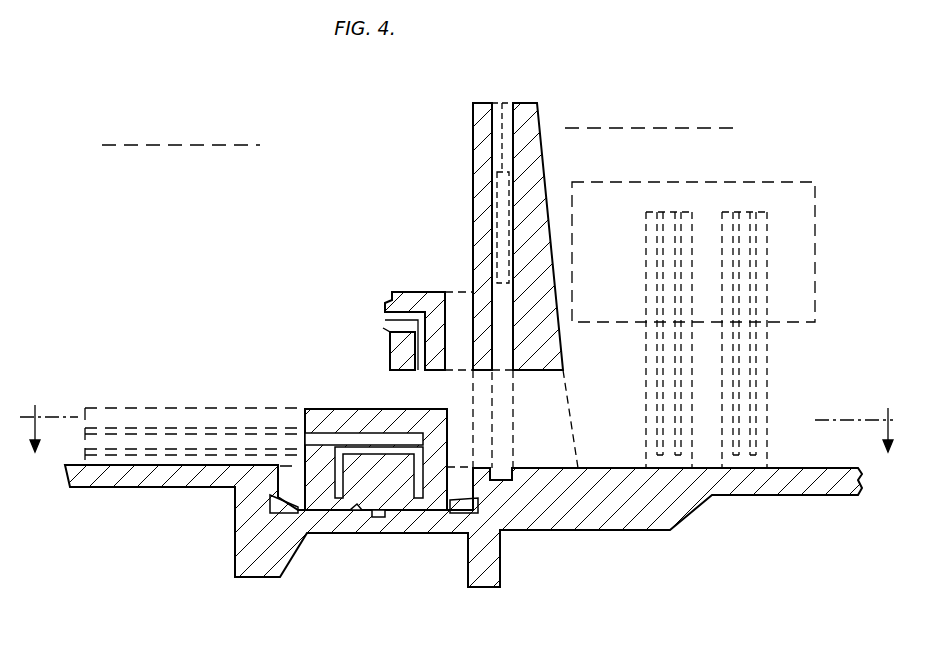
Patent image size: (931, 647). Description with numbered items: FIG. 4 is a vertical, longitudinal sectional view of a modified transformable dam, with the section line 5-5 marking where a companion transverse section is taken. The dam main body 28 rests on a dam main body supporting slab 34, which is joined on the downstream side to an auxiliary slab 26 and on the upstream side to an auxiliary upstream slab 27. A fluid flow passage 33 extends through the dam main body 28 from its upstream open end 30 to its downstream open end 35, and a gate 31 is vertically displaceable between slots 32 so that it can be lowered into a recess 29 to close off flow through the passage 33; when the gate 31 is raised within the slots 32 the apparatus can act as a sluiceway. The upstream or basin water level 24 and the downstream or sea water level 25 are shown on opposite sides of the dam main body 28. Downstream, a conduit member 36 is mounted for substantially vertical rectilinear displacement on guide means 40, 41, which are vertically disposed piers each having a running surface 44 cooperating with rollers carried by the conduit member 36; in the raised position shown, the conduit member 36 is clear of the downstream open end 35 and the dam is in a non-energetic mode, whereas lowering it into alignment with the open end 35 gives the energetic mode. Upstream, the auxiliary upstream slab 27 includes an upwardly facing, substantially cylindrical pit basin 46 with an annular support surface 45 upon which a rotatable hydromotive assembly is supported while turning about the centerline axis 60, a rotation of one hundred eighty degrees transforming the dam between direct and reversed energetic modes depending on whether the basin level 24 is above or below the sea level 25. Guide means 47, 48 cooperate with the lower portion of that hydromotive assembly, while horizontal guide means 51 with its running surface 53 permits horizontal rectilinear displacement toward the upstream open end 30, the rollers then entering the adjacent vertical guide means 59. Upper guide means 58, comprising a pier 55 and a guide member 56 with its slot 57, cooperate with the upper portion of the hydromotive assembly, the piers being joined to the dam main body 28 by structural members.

The section line 5- 5 is at (457, 440).
The upstream water level 24 is at (166, 142).
The downstream water level 25 is at (686, 120).
The auxiliary slab 26 is at (753, 492).
The auxiliary upstream slab 27 is at (158, 484).
The dam main body 28 is at (523, 301).
The recess 29 is at (500, 475).
The upstream open end 30 is at (473, 408).
The gate 31 is at (512, 250).
The slots 32 is at (501, 103).
The fluid flow passage 33 is at (529, 414).
The dam main body supporting slab 34 is at (588, 509).
The downstream open end 35 is at (568, 386).
The conduit member 36 is at (778, 222).
The guide means 40 is at (446, 340).
The guide means 41 is at (765, 385).
The running surface 44 is at (765, 356).
The annular support surface 45 is at (290, 514).
The pit basin 46 is at (360, 510).
The guide means 47 is at (329, 490).
The guide means 48 is at (366, 491).
The horizontal guide means 51 is at (232, 418).
The running surface 53 is at (178, 430).
The pier 55 is at (420, 292).
The guide member 56 is at (389, 340).
The slot 57 is at (418, 360).
The upper guide means 58 is at (386, 320).
The vertical guide means 59 is at (340, 450).
The centerline axis 60 is at (425, 452).